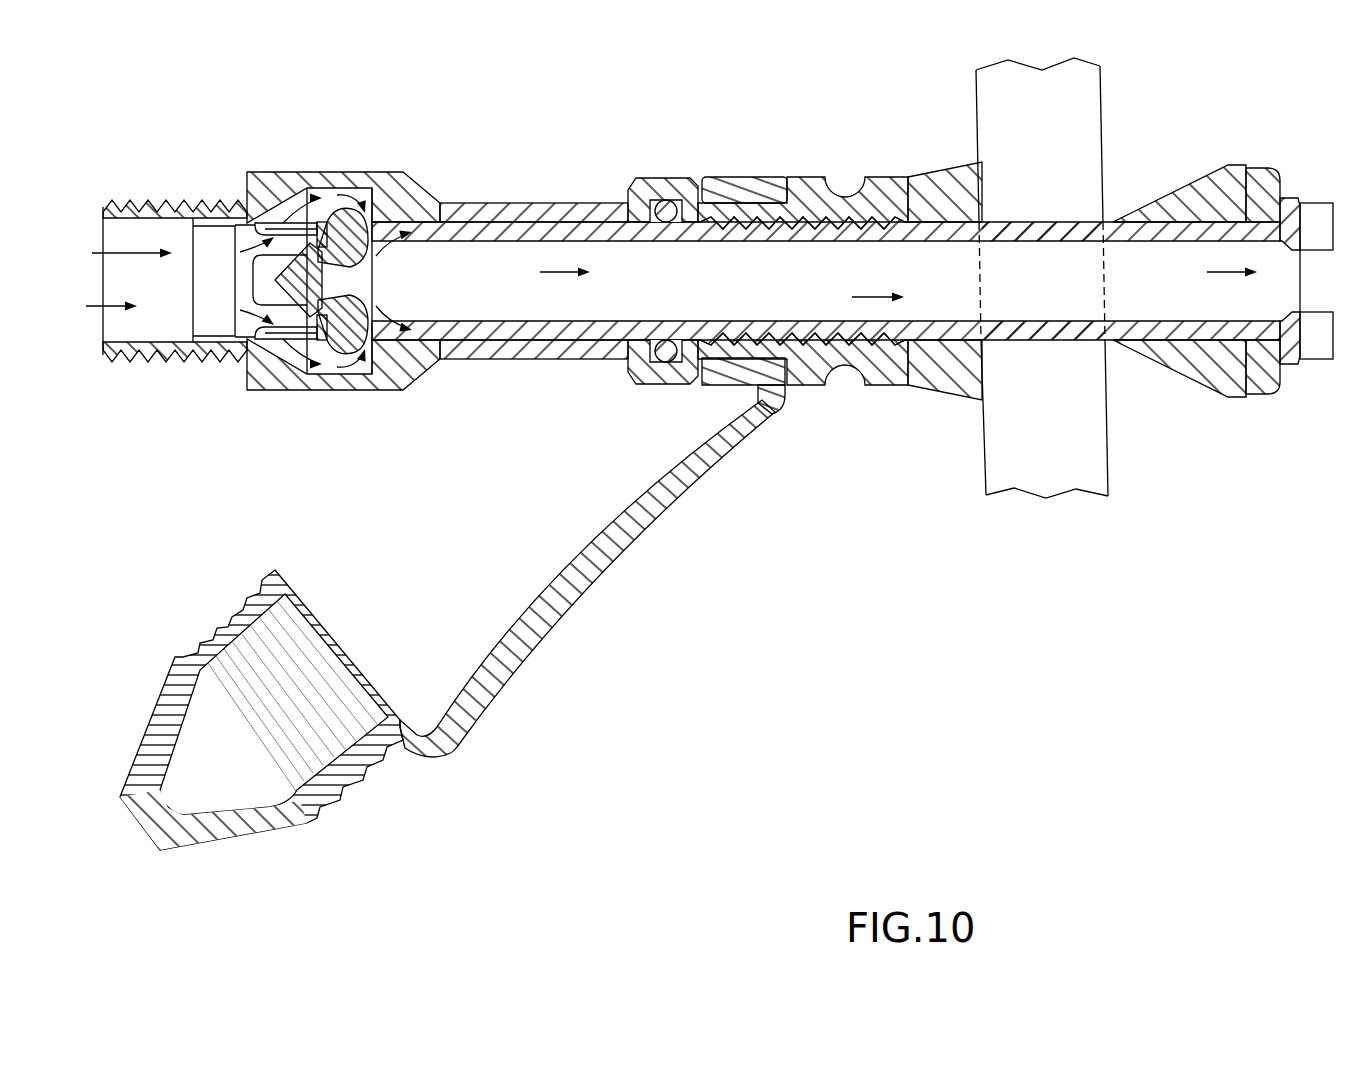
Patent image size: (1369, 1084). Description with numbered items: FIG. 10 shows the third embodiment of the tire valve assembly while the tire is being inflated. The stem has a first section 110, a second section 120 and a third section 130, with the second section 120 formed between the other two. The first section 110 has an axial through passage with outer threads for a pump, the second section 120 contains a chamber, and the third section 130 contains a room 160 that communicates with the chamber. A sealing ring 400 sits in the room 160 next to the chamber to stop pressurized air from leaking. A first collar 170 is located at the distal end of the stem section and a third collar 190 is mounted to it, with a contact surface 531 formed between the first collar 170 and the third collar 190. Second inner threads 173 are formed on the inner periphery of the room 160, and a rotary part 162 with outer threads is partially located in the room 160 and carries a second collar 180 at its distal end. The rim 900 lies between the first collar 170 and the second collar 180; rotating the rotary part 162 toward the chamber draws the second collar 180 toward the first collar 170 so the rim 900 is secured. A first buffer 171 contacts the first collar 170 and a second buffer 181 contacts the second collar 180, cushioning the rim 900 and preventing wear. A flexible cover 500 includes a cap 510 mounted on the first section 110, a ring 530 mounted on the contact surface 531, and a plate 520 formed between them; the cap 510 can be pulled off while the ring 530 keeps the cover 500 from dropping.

The first section 110 is at (165, 188).
The second section 120 is at (306, 160).
The third section 130 is at (472, 203).
The room 160 is at (612, 258).
The rotary part 162 is at (1041, 355).
The first collar 170 is at (880, 190).
The first buffer 171 is at (935, 388).
The second inner threads 173 is at (830, 315).
The second collar 180 is at (1266, 386).
The second buffer 181 is at (1186, 382).
The third collar 190 is at (632, 370).
The sealing ring 400 is at (668, 200).
The cover 500 is at (419, 625).
The cap 510 is at (163, 644).
The plate 520 is at (601, 578).
The ring 530 is at (753, 168).
The contact surface 531 is at (737, 358).
The rim 900 is at (1116, 148).